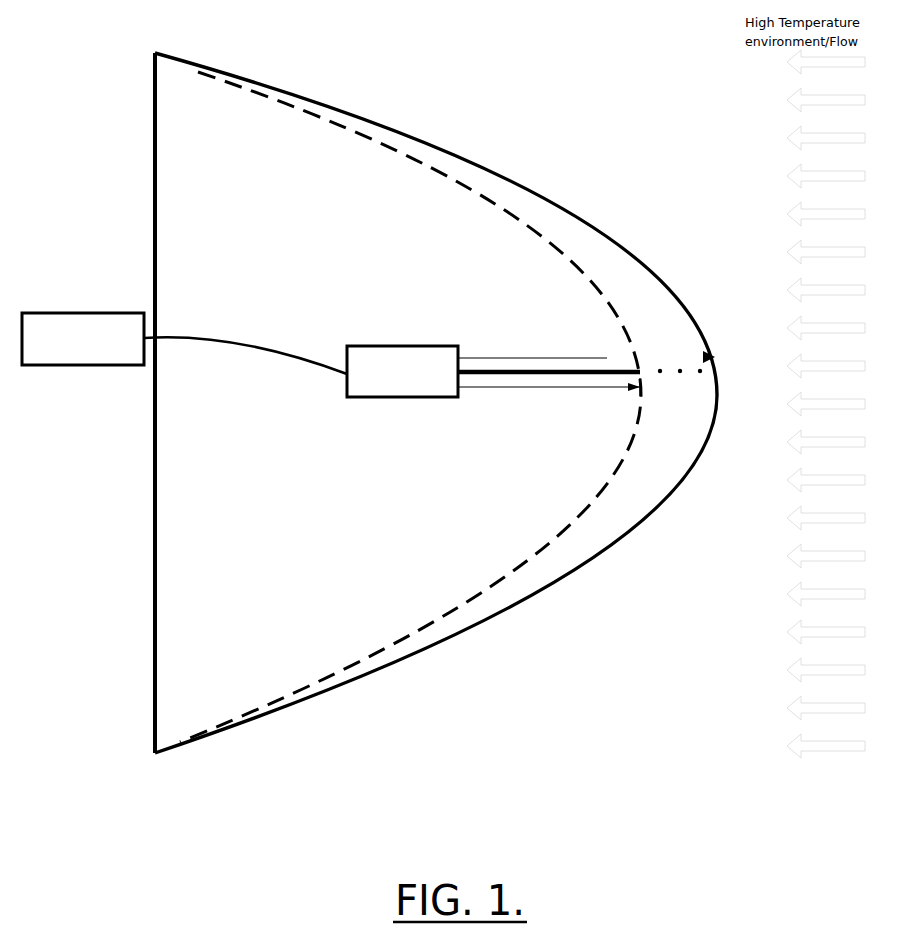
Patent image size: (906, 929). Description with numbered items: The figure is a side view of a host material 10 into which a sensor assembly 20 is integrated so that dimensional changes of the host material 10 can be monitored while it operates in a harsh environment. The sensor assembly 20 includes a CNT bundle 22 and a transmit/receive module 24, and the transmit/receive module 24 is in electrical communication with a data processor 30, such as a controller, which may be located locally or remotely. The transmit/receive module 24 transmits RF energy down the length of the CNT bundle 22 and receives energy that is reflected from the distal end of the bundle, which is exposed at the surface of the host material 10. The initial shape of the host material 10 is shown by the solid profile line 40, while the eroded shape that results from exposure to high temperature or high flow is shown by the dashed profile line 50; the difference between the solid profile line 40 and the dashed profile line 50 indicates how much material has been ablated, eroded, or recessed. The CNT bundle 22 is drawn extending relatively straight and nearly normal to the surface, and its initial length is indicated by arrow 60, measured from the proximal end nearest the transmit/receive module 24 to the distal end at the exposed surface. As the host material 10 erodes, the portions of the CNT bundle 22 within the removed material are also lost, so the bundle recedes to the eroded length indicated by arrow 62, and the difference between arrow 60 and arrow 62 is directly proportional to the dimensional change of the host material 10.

The host material 10 is at (188, 160).
The sensor assembly 20 is at (470, 322).
The CNT bundle 22 is at (518, 374).
The transmit/receive module 24 is at (395, 397).
The data processor 30 is at (90, 365).
The solid profile line 40 is at (612, 236).
The dashed profile line 50 is at (500, 207).
The arrow indicating initial length 60 is at (577, 358).
The arrow indicating eroded length 62 is at (595, 387).